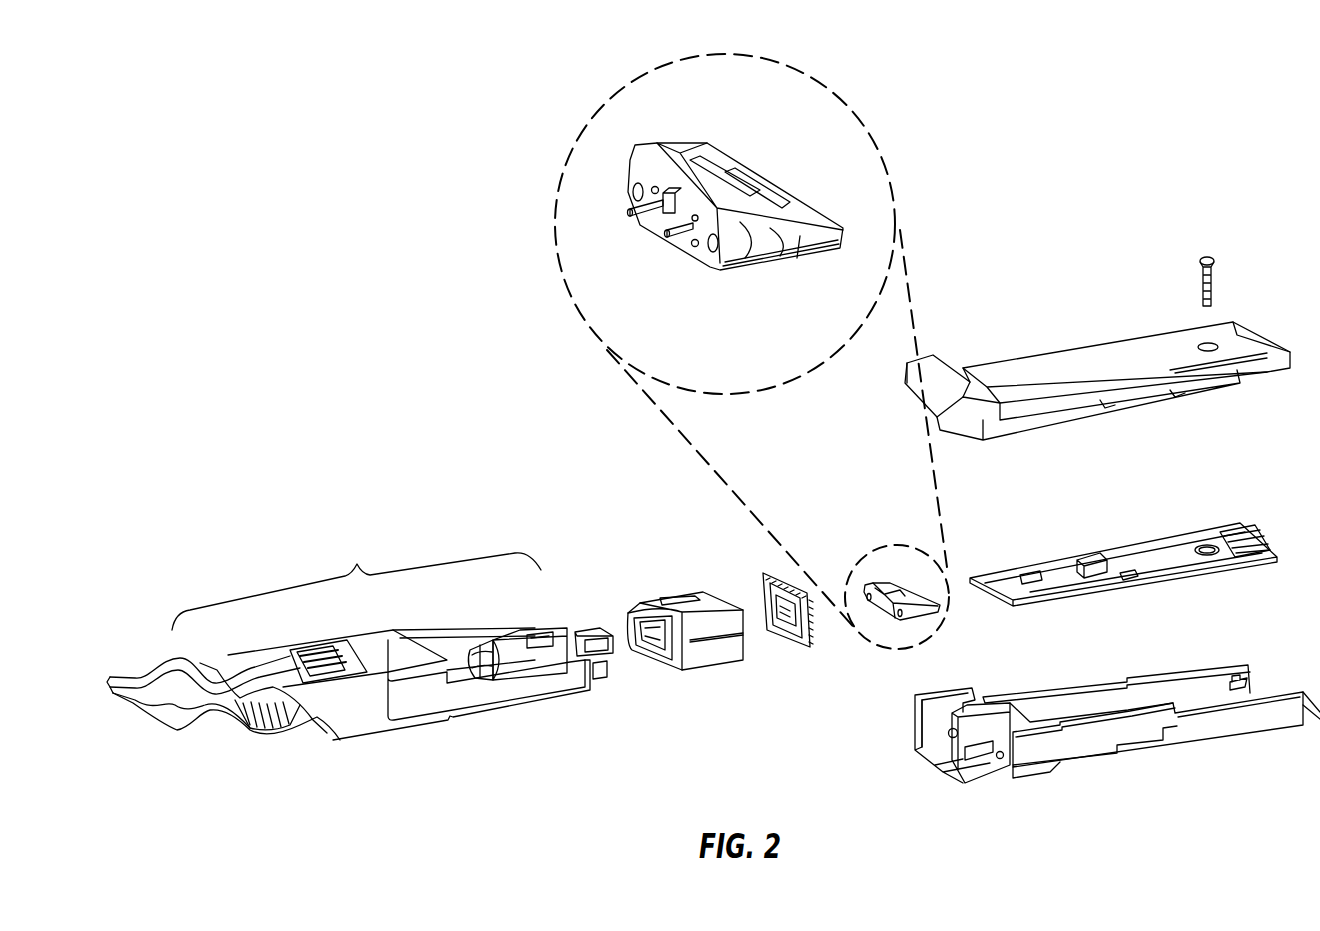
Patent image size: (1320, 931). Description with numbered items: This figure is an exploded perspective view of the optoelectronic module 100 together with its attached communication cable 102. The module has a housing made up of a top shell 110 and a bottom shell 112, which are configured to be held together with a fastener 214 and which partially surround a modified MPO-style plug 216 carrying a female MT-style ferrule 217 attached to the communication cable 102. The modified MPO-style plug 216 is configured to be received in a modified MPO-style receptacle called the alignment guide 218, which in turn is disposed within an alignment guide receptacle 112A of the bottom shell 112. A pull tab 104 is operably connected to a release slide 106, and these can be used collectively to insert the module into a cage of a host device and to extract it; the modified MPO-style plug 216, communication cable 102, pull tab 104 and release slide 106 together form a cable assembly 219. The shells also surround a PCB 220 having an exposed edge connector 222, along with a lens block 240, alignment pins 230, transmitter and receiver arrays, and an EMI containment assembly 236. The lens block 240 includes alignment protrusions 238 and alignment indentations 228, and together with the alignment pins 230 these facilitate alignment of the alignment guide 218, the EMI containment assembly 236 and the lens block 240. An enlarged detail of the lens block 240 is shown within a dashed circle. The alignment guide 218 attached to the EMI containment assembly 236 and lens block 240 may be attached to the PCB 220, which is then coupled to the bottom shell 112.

The optoelectronic module 100 is at (1233, 120).
The communication cable 102 is at (227, 712).
The pull tab 104 is at (180, 663).
The release slide 106 is at (427, 708).
The top shell 110 is at (1022, 370).
The bottom shell 112 is at (1225, 725).
The alignment guide receptacle 112A is at (940, 736).
The fastener 214 is at (1200, 288).
The modified MPO-style plug 216 is at (549, 634).
The female MT-style ferrule 217 is at (610, 652).
The alignment guide 218 is at (662, 582).
The cable assembly 219 is at (356, 583).
The PCB 220 is at (1140, 552).
The exposed edge connector 222 is at (1265, 545).
The alignment indentations 228 is at (693, 245).
The alignment pins 230 is at (630, 211).
The EMI containment assembly 236 is at (775, 570).
The alignment protrusions 238 is at (657, 217).
The lens block 240 is at (823, 238).